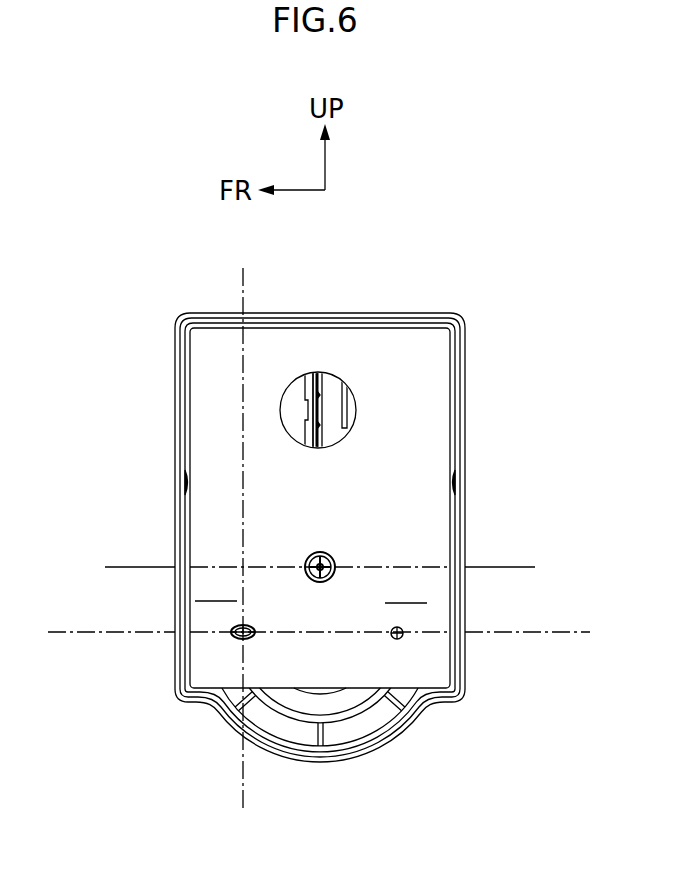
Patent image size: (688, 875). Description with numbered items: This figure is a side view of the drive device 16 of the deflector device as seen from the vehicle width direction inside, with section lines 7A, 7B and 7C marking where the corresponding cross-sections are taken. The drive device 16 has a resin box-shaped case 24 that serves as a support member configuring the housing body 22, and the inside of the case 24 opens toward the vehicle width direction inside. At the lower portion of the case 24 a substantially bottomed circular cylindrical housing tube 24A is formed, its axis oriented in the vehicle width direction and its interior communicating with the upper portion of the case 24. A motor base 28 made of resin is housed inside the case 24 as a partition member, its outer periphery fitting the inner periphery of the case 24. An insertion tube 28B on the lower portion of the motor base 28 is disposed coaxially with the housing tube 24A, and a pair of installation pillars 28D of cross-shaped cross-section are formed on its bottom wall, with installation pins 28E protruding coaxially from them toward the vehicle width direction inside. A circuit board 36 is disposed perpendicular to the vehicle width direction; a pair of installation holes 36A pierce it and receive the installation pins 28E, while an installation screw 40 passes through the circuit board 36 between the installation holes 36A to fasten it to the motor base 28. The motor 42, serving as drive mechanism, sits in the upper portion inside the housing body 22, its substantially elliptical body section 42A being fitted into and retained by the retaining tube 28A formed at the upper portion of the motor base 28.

The drive device 16 is at (289, 490).
The housing body 22 is at (176, 372).
The case 24 is at (261, 537).
The housing tube 24A is at (228, 722).
The motor base 28 is at (320, 747).
The retaining tube 28A is at (326, 393).
The insertion tube 28B is at (370, 748).
The installation pillars 28D is at (250, 640).
The installation pins 28E is at (240, 640).
The circuit board 36 is at (428, 423).
The installation holes 36A is at (238, 627).
The installation screw 40 is at (323, 553).
The motor 42 is at (317, 432).
The body section 42A is at (293, 428).
The section line 7A is at (590, 632).
The section line 7B is at (533, 567).
The section line 7C is at (256, 824).